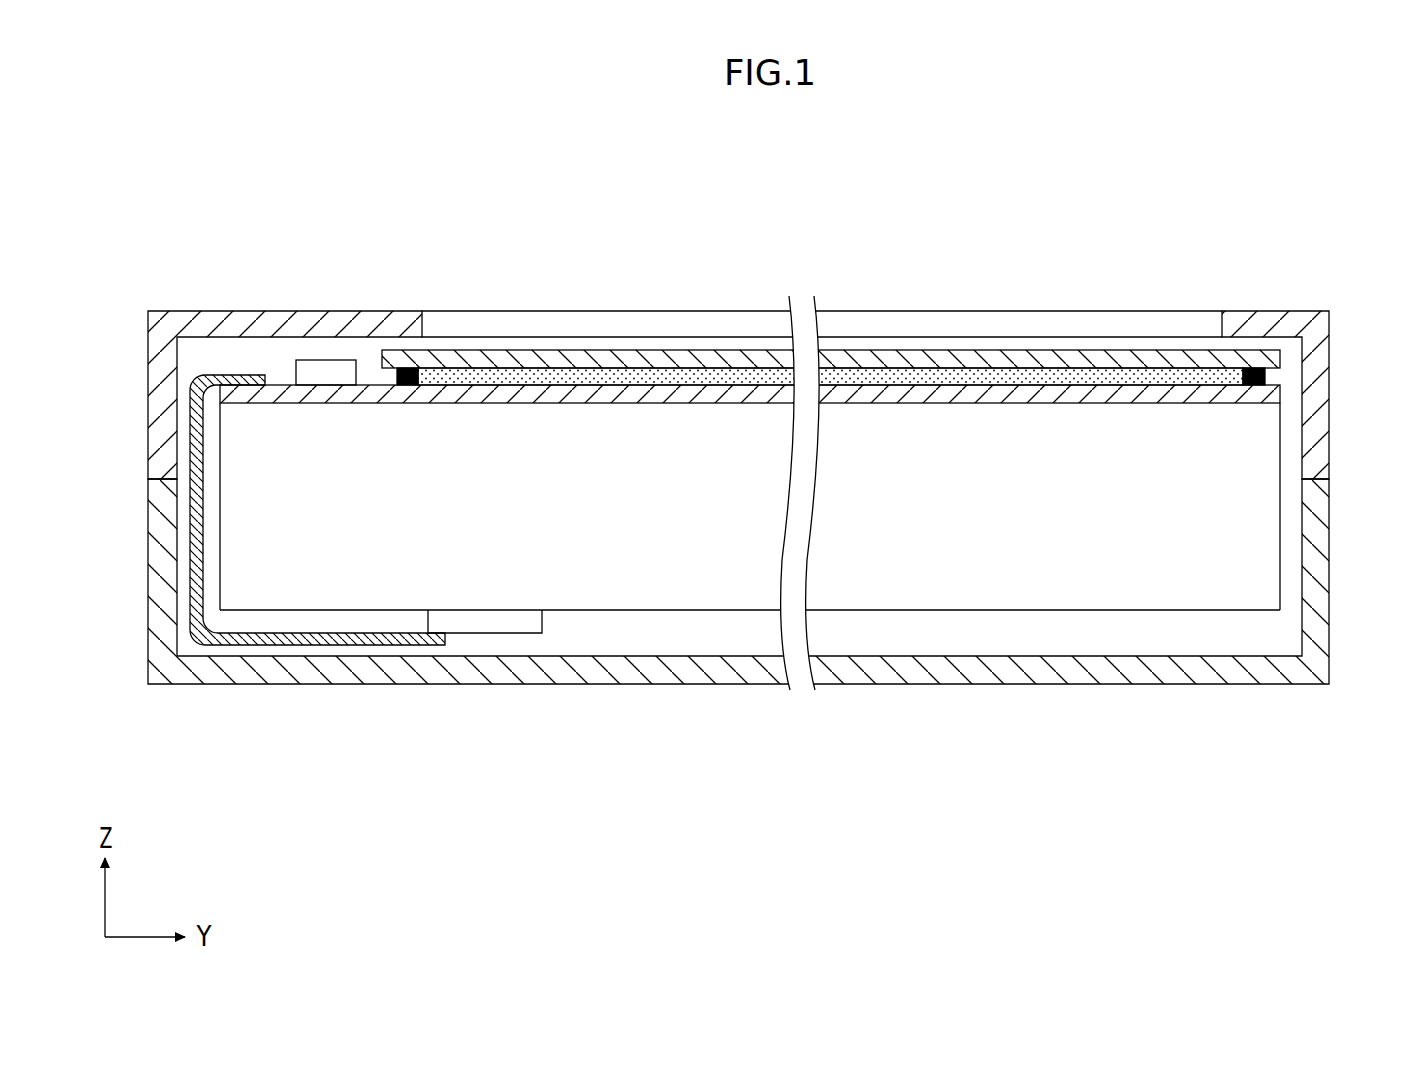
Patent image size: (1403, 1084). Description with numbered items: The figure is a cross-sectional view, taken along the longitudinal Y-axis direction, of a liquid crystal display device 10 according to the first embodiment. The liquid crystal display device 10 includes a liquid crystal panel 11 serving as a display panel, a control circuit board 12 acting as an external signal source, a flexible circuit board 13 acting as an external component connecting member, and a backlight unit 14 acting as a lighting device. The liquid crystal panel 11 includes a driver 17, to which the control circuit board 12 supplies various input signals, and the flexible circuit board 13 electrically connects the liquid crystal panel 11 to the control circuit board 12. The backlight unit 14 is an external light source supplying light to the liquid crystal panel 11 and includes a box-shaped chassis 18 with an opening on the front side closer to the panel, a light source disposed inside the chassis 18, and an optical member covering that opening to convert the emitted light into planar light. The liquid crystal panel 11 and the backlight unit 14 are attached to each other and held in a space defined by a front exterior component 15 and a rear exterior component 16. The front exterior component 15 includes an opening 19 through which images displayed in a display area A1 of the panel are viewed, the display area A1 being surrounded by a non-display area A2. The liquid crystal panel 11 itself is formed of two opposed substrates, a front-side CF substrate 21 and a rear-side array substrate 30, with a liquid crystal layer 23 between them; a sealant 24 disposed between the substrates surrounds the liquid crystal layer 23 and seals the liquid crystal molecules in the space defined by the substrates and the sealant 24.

The liquid crystal display device 10 is at (1174, 240).
The liquid crystal panel 11 is at (927, 352).
The control circuit board 12 is at (511, 622).
The flexible circuit board 13 is at (193, 378).
The backlight unit 14 is at (628, 612).
The front exterior component 15 is at (1318, 367).
The rear exterior component 16 is at (1318, 573).
The driver 17 is at (323, 372).
The chassis 18 is at (730, 553).
The opening 19 is at (423, 336).
The CF substrate 21 is at (577, 352).
The liquid crystal layer 23 is at (625, 380).
The sealant 24 is at (406, 368).
The array substrate 30 is at (745, 393).
The display area A1 is at (495, 385).
The non-display area A2 is at (272, 355).